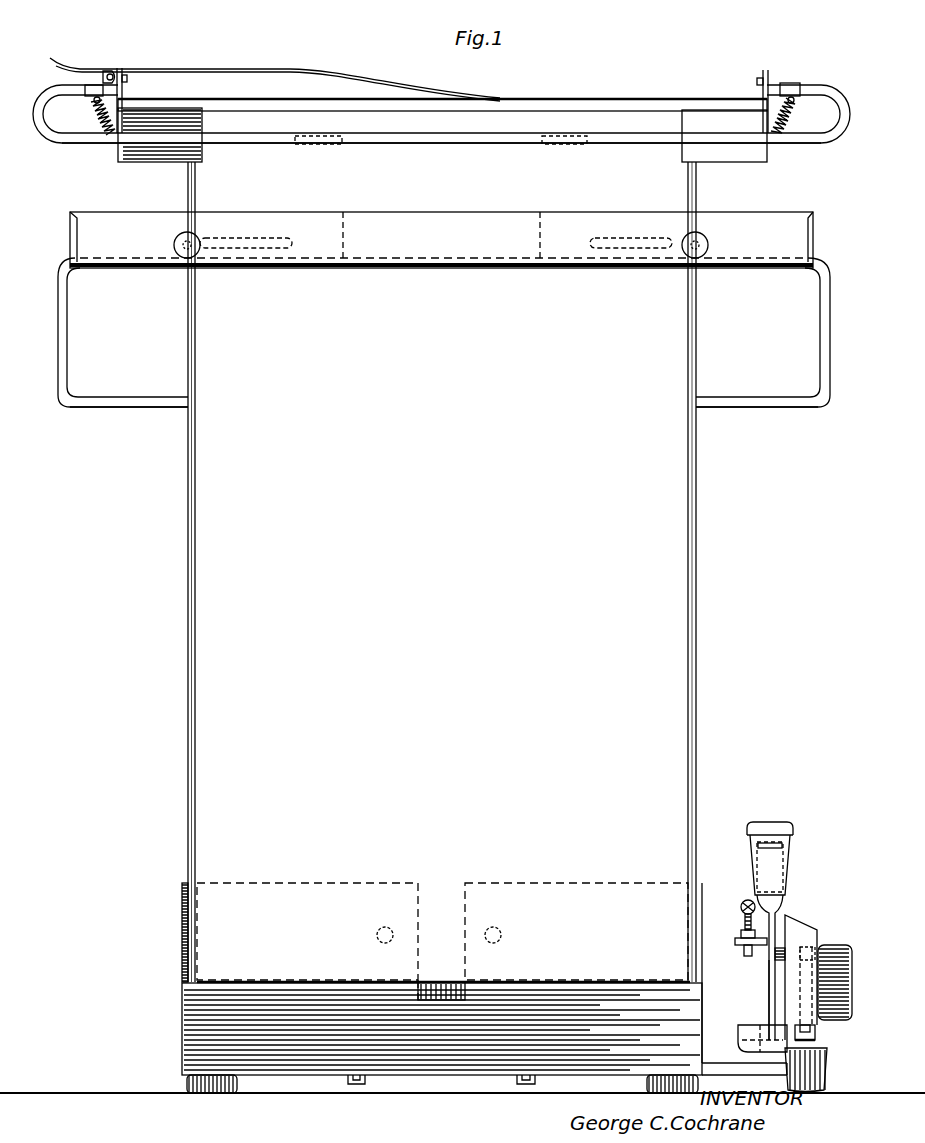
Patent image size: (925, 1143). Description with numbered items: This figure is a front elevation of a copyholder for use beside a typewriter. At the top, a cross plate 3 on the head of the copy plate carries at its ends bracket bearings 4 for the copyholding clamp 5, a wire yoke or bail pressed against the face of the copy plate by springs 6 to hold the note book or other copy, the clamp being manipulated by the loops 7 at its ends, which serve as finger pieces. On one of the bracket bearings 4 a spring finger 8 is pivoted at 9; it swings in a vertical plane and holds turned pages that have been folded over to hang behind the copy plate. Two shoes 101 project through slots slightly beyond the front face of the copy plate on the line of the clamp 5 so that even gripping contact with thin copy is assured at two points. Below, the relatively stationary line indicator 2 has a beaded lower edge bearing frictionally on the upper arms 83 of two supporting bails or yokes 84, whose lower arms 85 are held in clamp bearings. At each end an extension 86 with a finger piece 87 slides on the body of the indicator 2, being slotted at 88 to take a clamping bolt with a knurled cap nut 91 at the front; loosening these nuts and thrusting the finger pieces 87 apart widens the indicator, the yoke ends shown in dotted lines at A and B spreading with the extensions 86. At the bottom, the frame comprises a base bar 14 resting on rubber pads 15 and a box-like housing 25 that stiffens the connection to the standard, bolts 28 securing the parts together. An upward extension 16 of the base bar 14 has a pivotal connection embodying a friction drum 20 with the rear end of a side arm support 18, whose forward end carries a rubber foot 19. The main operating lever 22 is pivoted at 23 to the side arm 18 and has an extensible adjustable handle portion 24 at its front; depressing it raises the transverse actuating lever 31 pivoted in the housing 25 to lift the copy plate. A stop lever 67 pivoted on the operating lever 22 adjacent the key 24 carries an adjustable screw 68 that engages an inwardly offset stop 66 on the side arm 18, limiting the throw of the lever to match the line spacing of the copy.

The line indicator 2 is at (492, 212).
The cross plate 3 is at (693, 98).
The bracket bearings 4 is at (124, 103).
The copyholding clamp 5 is at (266, 138).
The springs 6 is at (98, 136).
The loops 7 is at (829, 93).
The spring finger 8 is at (290, 69).
The pivot 9 is at (110, 70).
The base bar 14 is at (282, 1073).
The rubber pads 15 is at (185, 1082).
The upward extension 16 is at (815, 1031).
The side arm support 18 is at (812, 927).
The rubber foot 19 is at (826, 1064).
The friction drum 20 is at (843, 941).
The main operating lever 22 is at (768, 956).
The pivot 23 is at (764, 975).
The adjustable handle portion 24 is at (777, 872).
The box-like housing 25 is at (183, 1015).
The bolts 28 is at (520, 1083).
The actuating lever 31 is at (738, 1035).
The stop 66 is at (750, 1030).
The stop lever 67 is at (777, 822).
The screw 68 is at (741, 921).
The upper arms 83 is at (158, 260).
The supporting bails or yokes 84 is at (67, 345).
The lower arms 85 is at (170, 400).
The extension 86 is at (346, 238).
The finger piece 87 is at (70, 236).
The slot 88 is at (272, 238).
The knurled cap nut 91 is at (196, 236).
The shoes 101 is at (327, 148).
The yoke end A is at (440, 268).
The yoke end B is at (445, 268).